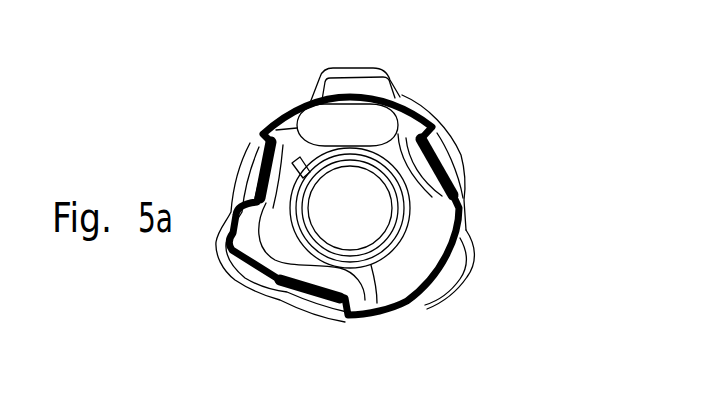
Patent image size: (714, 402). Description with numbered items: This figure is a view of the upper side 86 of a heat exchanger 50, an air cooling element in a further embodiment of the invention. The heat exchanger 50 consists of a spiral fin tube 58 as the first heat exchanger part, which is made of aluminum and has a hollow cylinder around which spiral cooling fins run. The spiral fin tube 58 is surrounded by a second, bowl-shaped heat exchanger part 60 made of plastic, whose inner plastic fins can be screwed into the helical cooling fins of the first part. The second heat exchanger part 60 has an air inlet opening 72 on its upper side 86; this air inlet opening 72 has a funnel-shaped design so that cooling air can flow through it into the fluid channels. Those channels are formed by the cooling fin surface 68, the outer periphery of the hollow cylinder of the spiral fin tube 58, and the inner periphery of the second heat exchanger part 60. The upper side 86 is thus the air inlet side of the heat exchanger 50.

The heat exchanger 50 is at (459, 147).
The spiral fin tube 58 is at (395, 257).
The second heat exchanger part 60 is at (300, 145).
The cooling fin surface 68 is at (420, 214).
The air inlet opening 72 is at (361, 124).
The upper side 86 is at (383, 312).